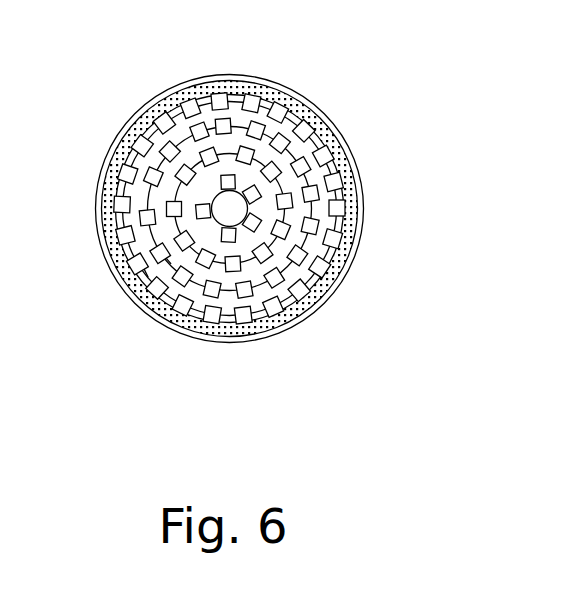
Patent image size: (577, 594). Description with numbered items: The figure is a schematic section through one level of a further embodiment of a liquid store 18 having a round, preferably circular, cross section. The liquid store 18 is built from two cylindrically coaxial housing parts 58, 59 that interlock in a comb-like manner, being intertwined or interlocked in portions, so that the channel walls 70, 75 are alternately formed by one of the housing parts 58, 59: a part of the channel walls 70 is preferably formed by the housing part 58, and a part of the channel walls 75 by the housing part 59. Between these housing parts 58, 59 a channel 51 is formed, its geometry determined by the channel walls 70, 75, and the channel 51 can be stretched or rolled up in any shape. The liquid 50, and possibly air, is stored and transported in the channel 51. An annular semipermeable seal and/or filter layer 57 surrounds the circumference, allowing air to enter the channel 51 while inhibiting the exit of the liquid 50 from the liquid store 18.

The liquid store 18 is at (217, 258).
The liquid 50 is at (222, 238).
The channel 51 is at (285, 162).
The semipermeable seal and/or filter layer 57 is at (251, 337).
The housing part 58 is at (155, 274).
The housing part 59 is at (180, 212).
The channel walls 70 is at (197, 138).
The channel walls 75 is at (299, 294).